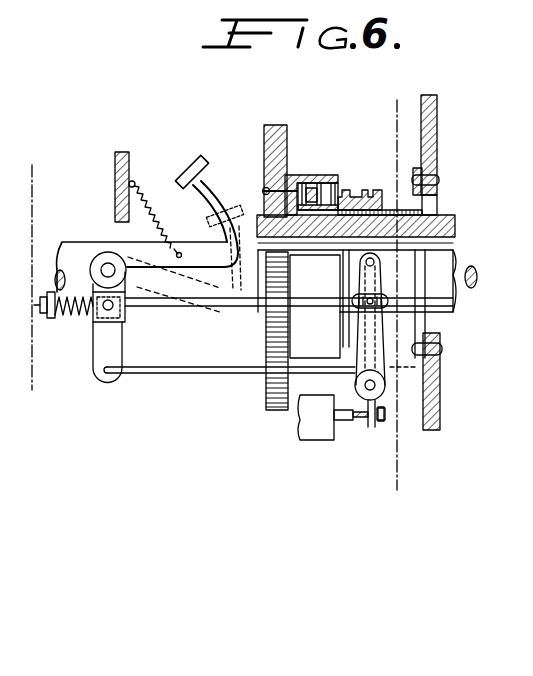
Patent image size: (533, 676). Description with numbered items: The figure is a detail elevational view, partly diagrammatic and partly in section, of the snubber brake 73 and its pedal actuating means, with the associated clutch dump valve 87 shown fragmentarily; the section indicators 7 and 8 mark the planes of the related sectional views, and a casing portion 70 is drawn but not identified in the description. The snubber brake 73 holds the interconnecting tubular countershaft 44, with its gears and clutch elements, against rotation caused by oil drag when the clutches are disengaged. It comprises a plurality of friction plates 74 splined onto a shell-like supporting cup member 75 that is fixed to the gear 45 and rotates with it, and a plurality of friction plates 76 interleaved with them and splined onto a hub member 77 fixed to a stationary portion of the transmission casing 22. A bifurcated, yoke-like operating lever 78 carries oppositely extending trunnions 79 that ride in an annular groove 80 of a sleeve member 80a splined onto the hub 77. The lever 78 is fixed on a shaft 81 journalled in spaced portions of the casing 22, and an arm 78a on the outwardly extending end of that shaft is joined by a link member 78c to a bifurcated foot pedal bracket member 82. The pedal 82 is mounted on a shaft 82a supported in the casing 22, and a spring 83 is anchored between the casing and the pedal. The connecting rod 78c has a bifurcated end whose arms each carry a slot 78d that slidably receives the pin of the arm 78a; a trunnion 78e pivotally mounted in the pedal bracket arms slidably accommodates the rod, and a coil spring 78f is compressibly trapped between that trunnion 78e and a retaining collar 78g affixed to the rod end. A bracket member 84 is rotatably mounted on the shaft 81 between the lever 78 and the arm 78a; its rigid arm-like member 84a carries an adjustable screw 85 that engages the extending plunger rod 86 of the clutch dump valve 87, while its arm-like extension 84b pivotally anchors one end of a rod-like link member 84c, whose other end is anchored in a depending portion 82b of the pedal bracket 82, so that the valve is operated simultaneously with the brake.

The section line 7- 7 is at (376, 115).
The section line 8- 8 is at (56, 180).
The transmission casing 22 is at (116, 163).
The tubular countershaft 44 is at (450, 222).
The gear 45 is at (264, 140).
The housing 70 is at (473, 248).
The snubber brake 73 is at (260, 395).
The friction plates 74 is at (305, 183).
The supporting cup member 75 is at (300, 183).
The friction plates 76 is at (336, 195).
The hub member 77 is at (401, 212).
The yoke-like operating lever 78 is at (383, 280).
The arm 78a is at (373, 348).
The link member 78c is at (243, 310).
The slot 78d is at (353, 301).
The trunnion 78e is at (122, 322).
The coil spring 78f is at (75, 312).
The retaining collar 78g is at (50, 318).
The trunnions 79 is at (360, 262).
The annular groove 80 is at (359, 198).
The sleeve member 80a is at (341, 191).
The shaft 81 is at (357, 382).
The foot pedal bracket member 82 is at (201, 165).
The shaft 82a is at (105, 258).
The depending portion 82b is at (100, 345).
The spring 83 is at (158, 233).
The bracket member 84 is at (386, 388).
The arm-like member 84a is at (373, 425).
The arm-like extension 84b is at (440, 353).
The rod-like link member 84c is at (202, 373).
The adjustable screw 85 is at (386, 413).
The plunger rod 86 is at (345, 422).
The clutch dump valve 87 is at (313, 432).